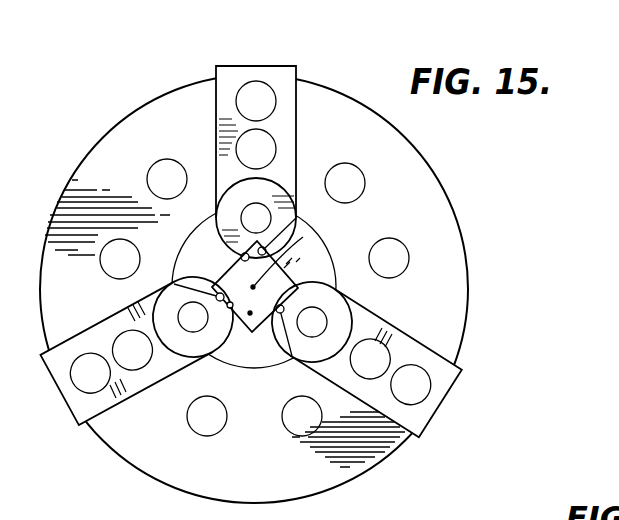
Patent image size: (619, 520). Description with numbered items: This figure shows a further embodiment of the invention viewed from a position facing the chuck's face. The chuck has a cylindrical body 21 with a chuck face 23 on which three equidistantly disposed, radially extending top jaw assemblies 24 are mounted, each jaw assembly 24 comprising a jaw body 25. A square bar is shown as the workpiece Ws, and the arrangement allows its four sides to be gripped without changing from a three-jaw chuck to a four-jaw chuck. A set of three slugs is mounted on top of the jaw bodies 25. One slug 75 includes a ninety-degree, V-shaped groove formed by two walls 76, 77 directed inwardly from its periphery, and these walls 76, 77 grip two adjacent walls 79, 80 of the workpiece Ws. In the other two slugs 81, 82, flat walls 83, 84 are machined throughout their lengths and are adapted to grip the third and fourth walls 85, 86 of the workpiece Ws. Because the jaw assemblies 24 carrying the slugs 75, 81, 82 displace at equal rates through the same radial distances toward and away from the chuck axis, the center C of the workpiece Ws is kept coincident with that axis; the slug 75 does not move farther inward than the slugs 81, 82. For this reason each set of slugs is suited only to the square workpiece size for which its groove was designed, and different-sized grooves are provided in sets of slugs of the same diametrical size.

The cylindrical body 21 is at (466, 244).
The chuck face 23 is at (322, 476).
The top jaw assembly 24 is at (297, 91).
The jaw body 25 is at (298, 123).
The slug 75 is at (275, 194).
The wall 76 is at (298, 217).
The wall 77 is at (240, 258).
The wall of workpiece 79 is at (290, 262).
The wall of workpiece 80 is at (210, 287).
The slug 81 is at (347, 321).
The slug 82 is at (180, 349).
The flat wall 83 is at (268, 320).
The flat wall 84 is at (204, 326).
The wall of workpiece 85 is at (320, 284).
The wall of workpiece 86 is at (212, 294).
The center of workpiece C is at (344, 232).
The square bar workpiece Ws is at (250, 315).